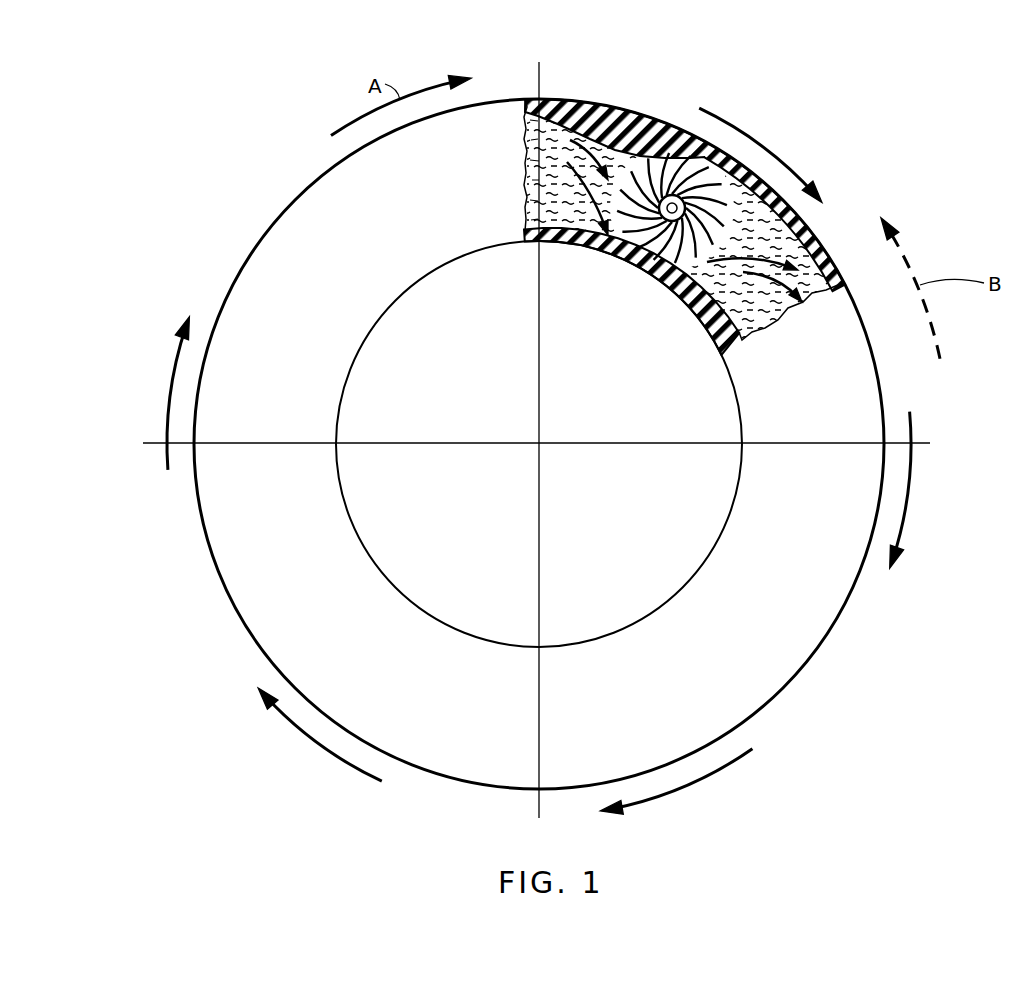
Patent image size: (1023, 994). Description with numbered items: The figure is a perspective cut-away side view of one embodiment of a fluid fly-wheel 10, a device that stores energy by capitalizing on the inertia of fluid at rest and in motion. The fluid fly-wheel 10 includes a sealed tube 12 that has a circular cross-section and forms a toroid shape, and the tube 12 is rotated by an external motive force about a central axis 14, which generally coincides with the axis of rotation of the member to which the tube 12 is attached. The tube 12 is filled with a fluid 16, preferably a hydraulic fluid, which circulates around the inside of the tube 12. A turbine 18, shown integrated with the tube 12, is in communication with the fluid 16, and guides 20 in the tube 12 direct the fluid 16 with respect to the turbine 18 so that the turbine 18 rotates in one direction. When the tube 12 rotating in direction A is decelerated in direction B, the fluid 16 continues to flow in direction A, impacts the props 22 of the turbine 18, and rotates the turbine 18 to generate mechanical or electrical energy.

The fluid fly-wheel 10 is at (572, 78).
The tube 12 is at (240, 268).
The central axis 14 is at (539, 443).
The fluid 16 is at (582, 194).
The turbine 18 is at (730, 197).
The guides 20 is at (612, 121).
The props 22 is at (700, 163).